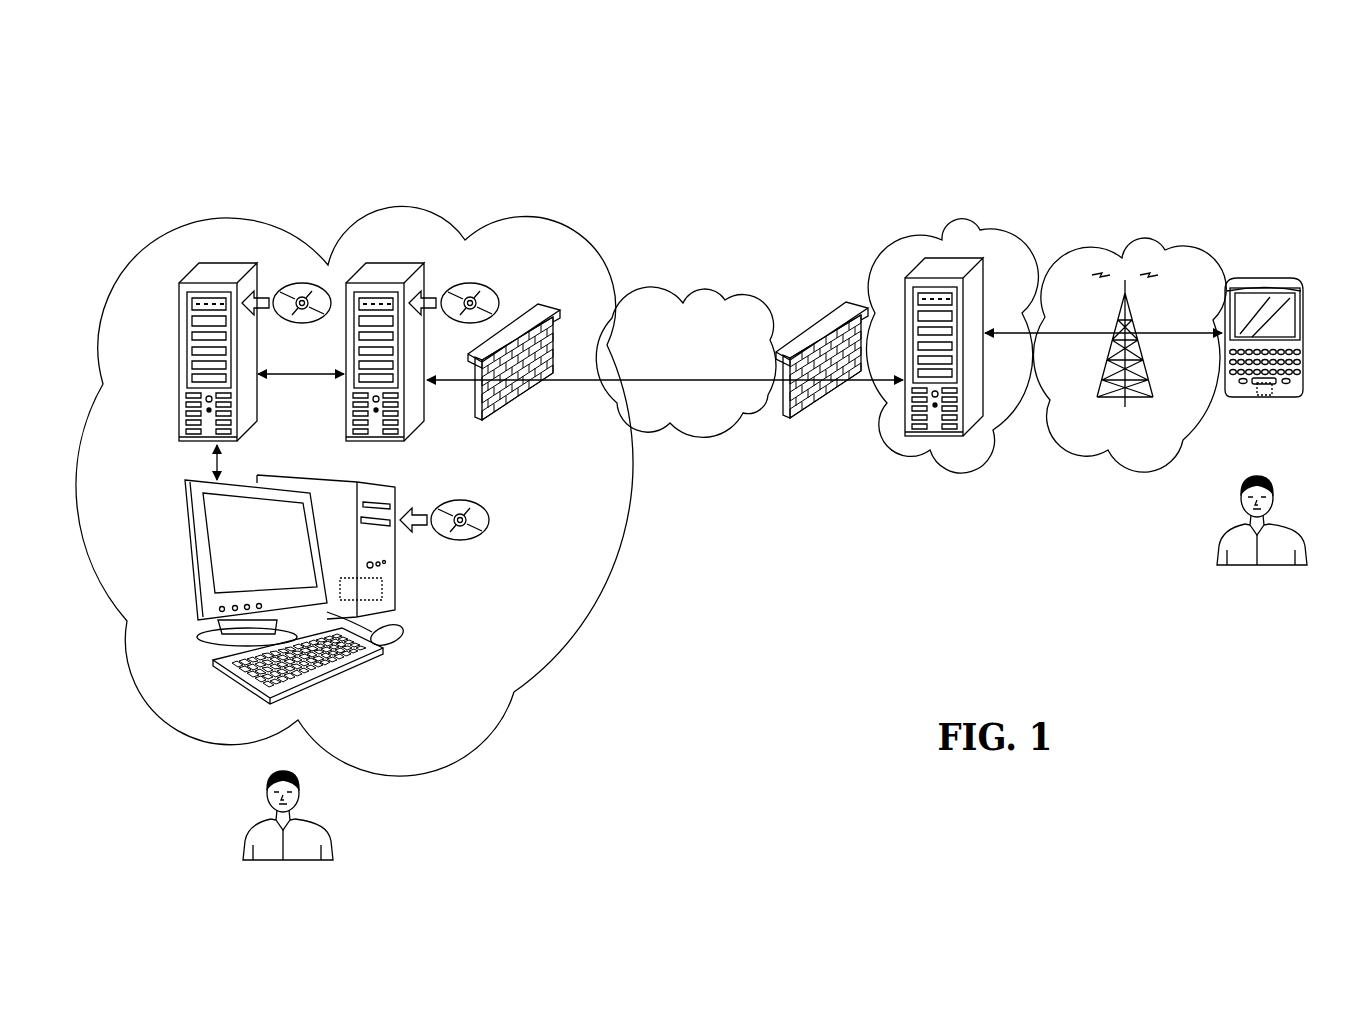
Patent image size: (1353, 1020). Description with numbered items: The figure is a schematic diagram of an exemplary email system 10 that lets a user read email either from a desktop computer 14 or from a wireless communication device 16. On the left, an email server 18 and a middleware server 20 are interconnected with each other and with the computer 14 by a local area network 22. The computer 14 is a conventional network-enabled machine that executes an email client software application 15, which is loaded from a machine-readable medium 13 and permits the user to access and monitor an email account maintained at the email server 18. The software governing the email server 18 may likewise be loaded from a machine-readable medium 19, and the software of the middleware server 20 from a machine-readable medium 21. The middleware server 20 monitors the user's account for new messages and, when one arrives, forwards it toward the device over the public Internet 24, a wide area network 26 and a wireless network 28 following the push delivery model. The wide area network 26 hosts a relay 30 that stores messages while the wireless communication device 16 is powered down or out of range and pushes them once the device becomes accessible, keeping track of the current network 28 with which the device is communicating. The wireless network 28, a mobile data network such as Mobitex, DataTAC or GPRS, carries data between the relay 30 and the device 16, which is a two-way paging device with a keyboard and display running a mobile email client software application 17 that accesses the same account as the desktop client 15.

The email system 10 is at (157, 99).
The machine-readable medium 13 is at (478, 528).
The desktop computer 14 is at (262, 589).
The email client software application 15 is at (376, 593).
The wireless communication device 16 is at (1280, 302).
The mobile email client software application 17 is at (1268, 400).
The email server 18 is at (176, 393).
The machine-readable medium 19 is at (300, 287).
The middleware server 20 is at (378, 445).
The machine-readable medium 21 is at (456, 320).
The local area network 22 is at (268, 203).
The Internet 24 is at (679, 368).
The wide area network 26 is at (957, 230).
The wireless network 28 is at (1085, 245).
The relay 30 is at (938, 267).